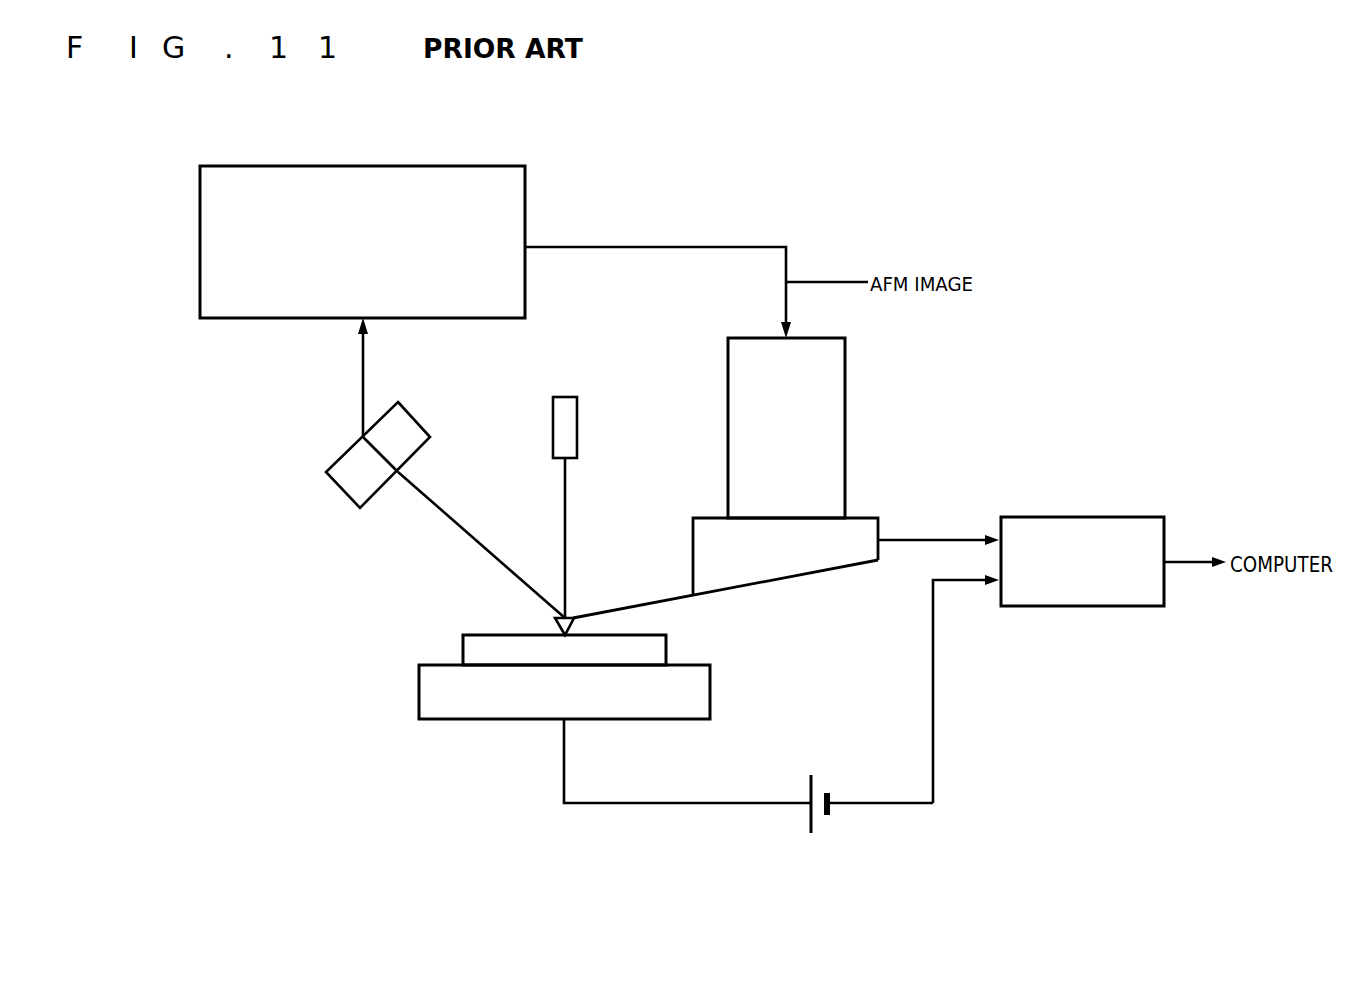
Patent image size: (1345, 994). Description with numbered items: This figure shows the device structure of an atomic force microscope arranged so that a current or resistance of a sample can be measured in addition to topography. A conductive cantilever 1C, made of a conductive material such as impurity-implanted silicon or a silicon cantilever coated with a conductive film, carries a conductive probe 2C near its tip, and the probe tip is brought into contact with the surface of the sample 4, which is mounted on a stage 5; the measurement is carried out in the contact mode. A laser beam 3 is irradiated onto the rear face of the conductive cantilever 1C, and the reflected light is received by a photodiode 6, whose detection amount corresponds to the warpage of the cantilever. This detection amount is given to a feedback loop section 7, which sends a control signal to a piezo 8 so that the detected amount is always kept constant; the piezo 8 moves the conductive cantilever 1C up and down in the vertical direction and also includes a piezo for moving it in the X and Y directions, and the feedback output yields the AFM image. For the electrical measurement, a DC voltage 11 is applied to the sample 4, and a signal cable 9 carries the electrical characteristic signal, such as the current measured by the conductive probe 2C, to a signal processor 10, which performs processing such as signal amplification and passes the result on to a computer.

The feedback loop section 7 is at (363, 166).
The photodiode 6 is at (417, 413).
The laser beam 3 is at (567, 513).
The conductive probe 2C is at (575, 632).
The sample 4 is at (667, 652).
The stage 5 is at (712, 692).
The piezo 8 is at (845, 445).
The conductive cantilever 1C is at (805, 562).
The signal cable 9 is at (935, 538).
The signal processor 10 is at (1075, 515).
The DC voltage 11 is at (820, 822).